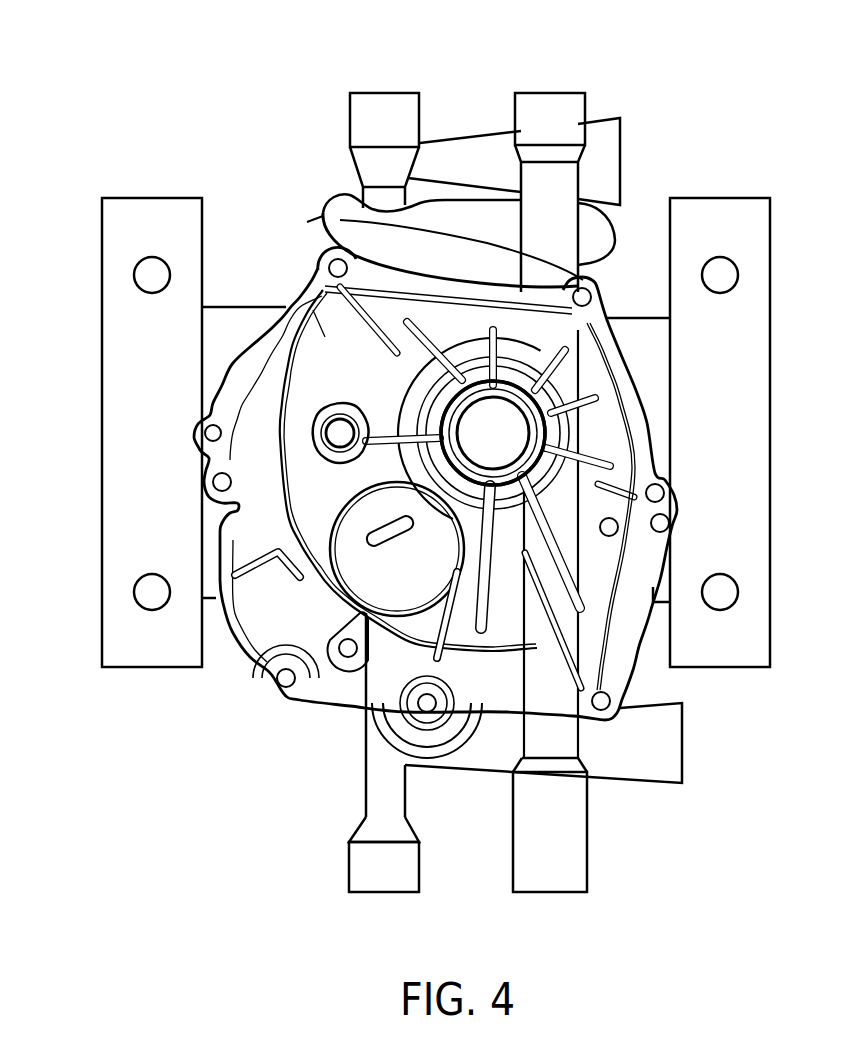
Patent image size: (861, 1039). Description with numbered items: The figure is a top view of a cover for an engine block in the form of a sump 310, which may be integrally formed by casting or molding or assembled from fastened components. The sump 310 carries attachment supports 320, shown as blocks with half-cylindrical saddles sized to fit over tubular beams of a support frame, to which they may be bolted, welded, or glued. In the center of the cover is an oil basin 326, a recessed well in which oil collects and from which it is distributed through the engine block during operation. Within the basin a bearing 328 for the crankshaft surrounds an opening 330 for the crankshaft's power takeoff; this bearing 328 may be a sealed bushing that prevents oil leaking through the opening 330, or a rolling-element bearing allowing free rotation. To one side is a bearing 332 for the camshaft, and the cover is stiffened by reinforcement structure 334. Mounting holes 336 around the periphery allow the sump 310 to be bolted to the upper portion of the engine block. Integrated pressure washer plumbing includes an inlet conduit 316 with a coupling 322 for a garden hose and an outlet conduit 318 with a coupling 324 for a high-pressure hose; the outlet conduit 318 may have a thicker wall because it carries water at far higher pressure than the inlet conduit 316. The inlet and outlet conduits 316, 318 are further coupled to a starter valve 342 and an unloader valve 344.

The sump 310 is at (195, 802).
The inlet conduit 316 is at (377, 790).
The outlet conduit 318 is at (533, 740).
The attachment supports 320 is at (135, 392).
The coupling 322 is at (385, 104).
The coupling 324 is at (545, 104).
The oil basin 326 is at (310, 300).
The bearing 328 is at (605, 350).
The opening 330 is at (503, 437).
The bearing 332 is at (320, 437).
The reinforcement structure 334 is at (483, 600).
The mounting holes 336 is at (333, 262).
The starter valve 342 is at (606, 157).
The unloader valve 344 is at (668, 752).